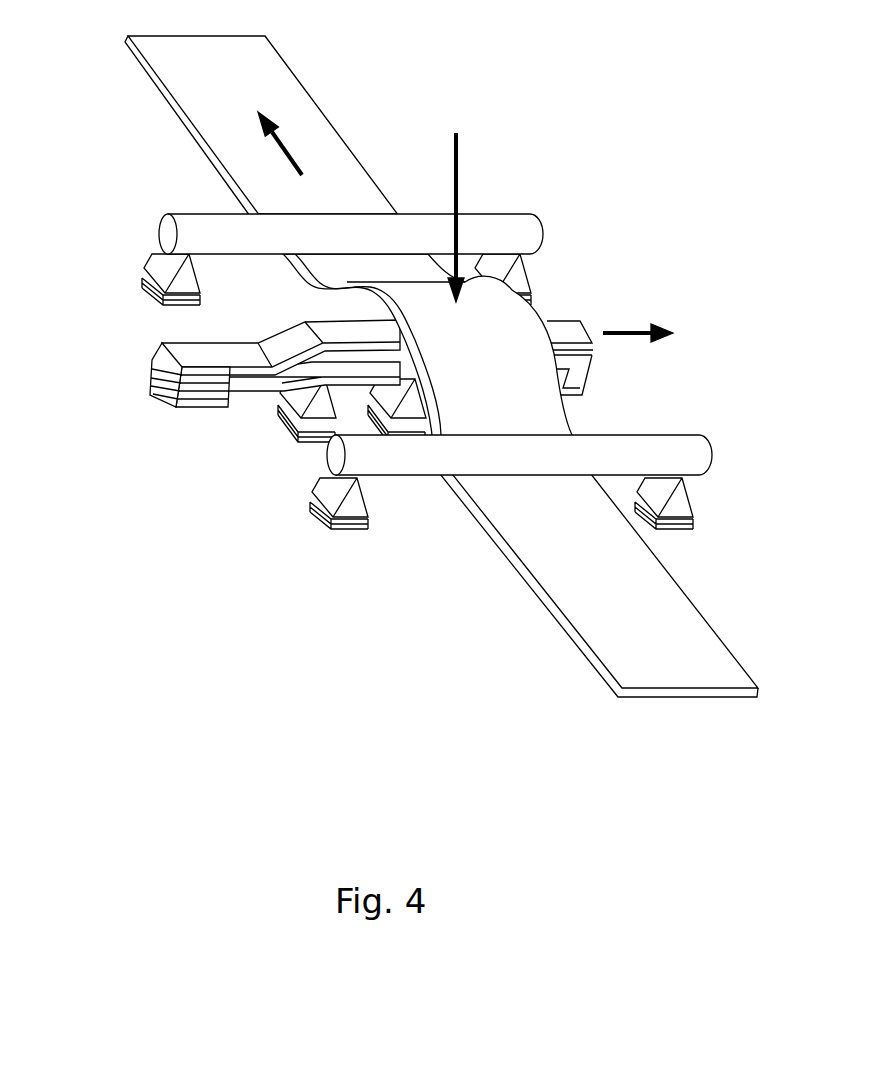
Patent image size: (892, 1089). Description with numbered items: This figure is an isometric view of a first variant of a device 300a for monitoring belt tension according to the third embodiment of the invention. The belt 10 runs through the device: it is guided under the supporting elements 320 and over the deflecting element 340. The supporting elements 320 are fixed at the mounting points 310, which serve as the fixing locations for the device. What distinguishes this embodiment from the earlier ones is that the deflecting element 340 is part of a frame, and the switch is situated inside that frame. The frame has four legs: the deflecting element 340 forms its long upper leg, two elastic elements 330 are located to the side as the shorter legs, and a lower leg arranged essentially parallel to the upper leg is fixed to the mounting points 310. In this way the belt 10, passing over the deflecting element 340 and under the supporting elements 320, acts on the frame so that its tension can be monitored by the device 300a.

The belt 10 is at (270, 90).
The device for monitoring belt tension 300a is at (424, 348).
The mounting points 310 is at (162, 268).
The supporting elements 320 is at (448, 230).
The elastic elements 330 is at (283, 343).
The deflecting element 340 is at (560, 327).